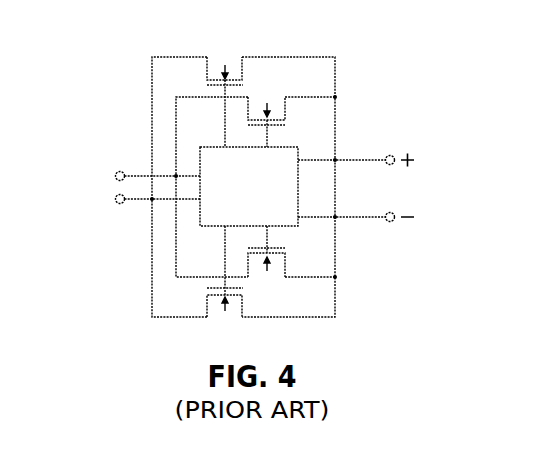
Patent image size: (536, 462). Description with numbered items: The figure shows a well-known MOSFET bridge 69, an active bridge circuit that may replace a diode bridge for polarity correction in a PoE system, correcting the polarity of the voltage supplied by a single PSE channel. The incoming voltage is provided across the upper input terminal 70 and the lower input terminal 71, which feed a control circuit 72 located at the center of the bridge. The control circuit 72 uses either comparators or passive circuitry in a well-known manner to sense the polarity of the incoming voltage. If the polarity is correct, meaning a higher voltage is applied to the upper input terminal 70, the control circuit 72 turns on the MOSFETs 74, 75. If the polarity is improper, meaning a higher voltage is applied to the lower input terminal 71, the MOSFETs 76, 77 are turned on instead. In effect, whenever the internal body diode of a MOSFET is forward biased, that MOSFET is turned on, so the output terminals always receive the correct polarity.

The MOSFET bridge 69 is at (81, 62).
The upper input terminal 70 is at (118, 171).
The lower input terminal 71 is at (118, 204).
The control circuit 72 is at (240, 198).
The MOSFET 74 is at (285, 108).
The MOSFET 75 is at (243, 308).
The MOSFET 76 is at (243, 65).
The MOSFET 77 is at (285, 270).